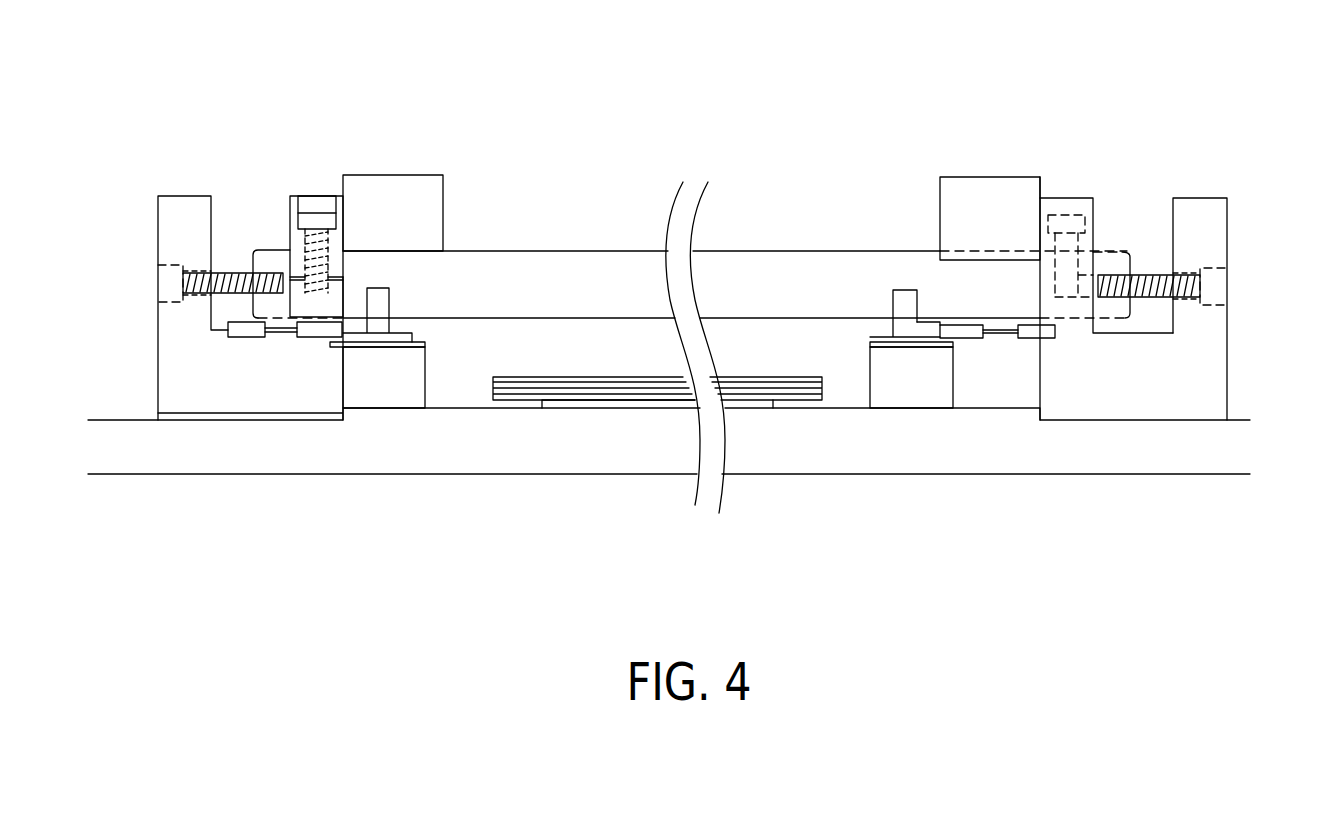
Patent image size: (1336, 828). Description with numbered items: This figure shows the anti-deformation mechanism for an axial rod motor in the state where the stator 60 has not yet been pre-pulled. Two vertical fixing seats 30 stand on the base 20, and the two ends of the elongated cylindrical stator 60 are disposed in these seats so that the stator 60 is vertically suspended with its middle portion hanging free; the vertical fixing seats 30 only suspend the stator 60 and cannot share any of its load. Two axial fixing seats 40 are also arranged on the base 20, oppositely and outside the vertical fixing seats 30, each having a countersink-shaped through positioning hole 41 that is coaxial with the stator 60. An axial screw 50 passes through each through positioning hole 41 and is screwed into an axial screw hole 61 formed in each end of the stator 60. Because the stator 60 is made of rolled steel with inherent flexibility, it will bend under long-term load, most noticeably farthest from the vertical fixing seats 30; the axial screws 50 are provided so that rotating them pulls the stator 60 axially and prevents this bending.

The base 20 is at (457, 470).
The vertical fixing seat 30 is at (321, 190).
The axial fixing seat 40 is at (187, 192).
The through positioning hole 41 is at (203, 288).
The axial screw 50 is at (150, 279).
The stator 60 is at (541, 250).
The axial screw hole 61 is at (265, 262).